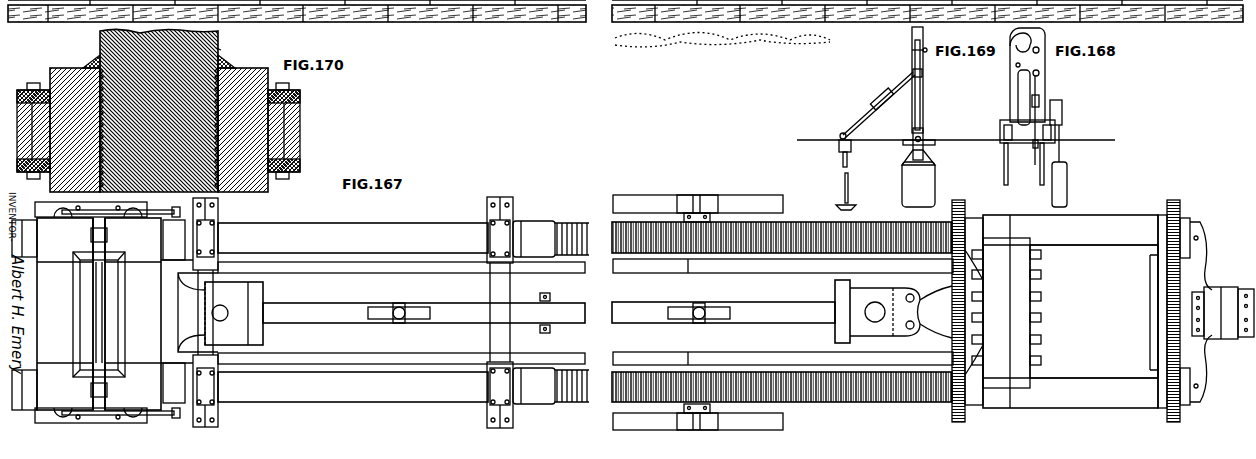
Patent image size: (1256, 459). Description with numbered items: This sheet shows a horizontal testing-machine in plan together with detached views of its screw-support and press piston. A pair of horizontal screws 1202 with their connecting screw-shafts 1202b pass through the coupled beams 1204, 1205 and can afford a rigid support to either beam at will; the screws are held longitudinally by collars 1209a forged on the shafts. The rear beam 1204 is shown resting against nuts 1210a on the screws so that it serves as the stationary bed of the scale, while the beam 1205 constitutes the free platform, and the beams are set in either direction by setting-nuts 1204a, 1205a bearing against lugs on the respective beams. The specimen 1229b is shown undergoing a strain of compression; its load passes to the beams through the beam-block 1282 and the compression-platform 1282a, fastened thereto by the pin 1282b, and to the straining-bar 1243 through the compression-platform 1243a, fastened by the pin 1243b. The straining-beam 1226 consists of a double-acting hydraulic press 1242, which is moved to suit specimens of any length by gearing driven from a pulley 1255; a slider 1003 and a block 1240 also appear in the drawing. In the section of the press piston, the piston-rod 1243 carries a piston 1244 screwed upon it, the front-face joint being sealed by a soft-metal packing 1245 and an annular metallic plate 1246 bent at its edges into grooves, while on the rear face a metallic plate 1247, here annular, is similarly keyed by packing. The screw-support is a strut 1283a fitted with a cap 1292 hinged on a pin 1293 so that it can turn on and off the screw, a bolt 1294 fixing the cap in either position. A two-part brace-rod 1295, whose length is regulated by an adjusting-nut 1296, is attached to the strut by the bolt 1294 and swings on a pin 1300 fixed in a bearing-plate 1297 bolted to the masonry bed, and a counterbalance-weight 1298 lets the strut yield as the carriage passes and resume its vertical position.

In FIG. 167, the slider clamp 1003 is at (411, 313).
In FIG. 168, the slider clamp 1003 is at (712, 313).
In FIG. 168, the horizontal screw 1202 is at (782, 307).
In FIG. 167, the screw-shaft 1202b is at (353, 312).
In FIG. 167, the rear beam 1204 is at (65, 314).
In FIG. 167, the setting-nut 1204a is at (75, 314).
In FIG. 167, the beam 1205 is at (133, 314).
In FIG. 167, the setting-nut 1205a is at (117, 314).
In FIG. 167, the collar 1209a is at (177, 311).
In FIG. 167, the nut 1210a is at (25, 315).
In FIG. 168, the straining-beam 1226 is at (1070, 311).
In FIG. 167, the specimen 1229b is at (536, 313).
In FIG. 170, the central block 1240 is at (159, 110).
In FIG. 168, the double-acting hydraulic press 1242 is at (1094, 311).
In FIG. 168, the piston-rod 1243 is at (901, 312).
In FIG. 168, the compression-platform 1243a is at (835, 311).
In FIG. 168, the pin 1243b is at (869, 312).
In FIG. 170, the piston 1244 is at (158, 123).
In FIG. 170, the packing 1245 is at (230, 44).
In FIG. 170, the annular metallic plate 1246 is at (236, 59).
In FIG. 170, the metallic plate 1247 is at (163, 134).
In FIG. 168, the pulley 1255 is at (1223, 313).
In FIG. 167, the beam-block 1282 is at (198, 312).
In FIG. 167, the compression-platform 1282a is at (240, 313).
In FIG. 167, the pin 1282b is at (216, 315).
In FIG. 169, the strut 1283a is at (927, 100).
In FIG. 168, the strut 1283a is at (1052, 120).
In FIG. 169, the cap 1292 is at (929, 79).
In FIG. 168, the cap 1292 is at (1036, 73).
In FIG. 169, the pin 1293 is at (906, 50).
In FIG. 169, the bolt 1294 is at (931, 73).
In FIG. 169, the brace-rod 1295 is at (879, 105).
In FIG. 168, the brace-rod 1295 is at (1023, 97).
In FIG. 169, the adjusting-nut 1296 is at (875, 99).
In FIG. 169, the bearing-plate 1297 is at (858, 175).
In FIG. 168, the bearing-plate 1297 is at (1027, 152).
In FIG. 169, the counterbalance-weight 1298 is at (918, 178).
In FIG. 168, the counterbalance-weight 1298 is at (1069, 153).
In FIG. 169, the pin 1300 is at (832, 136).